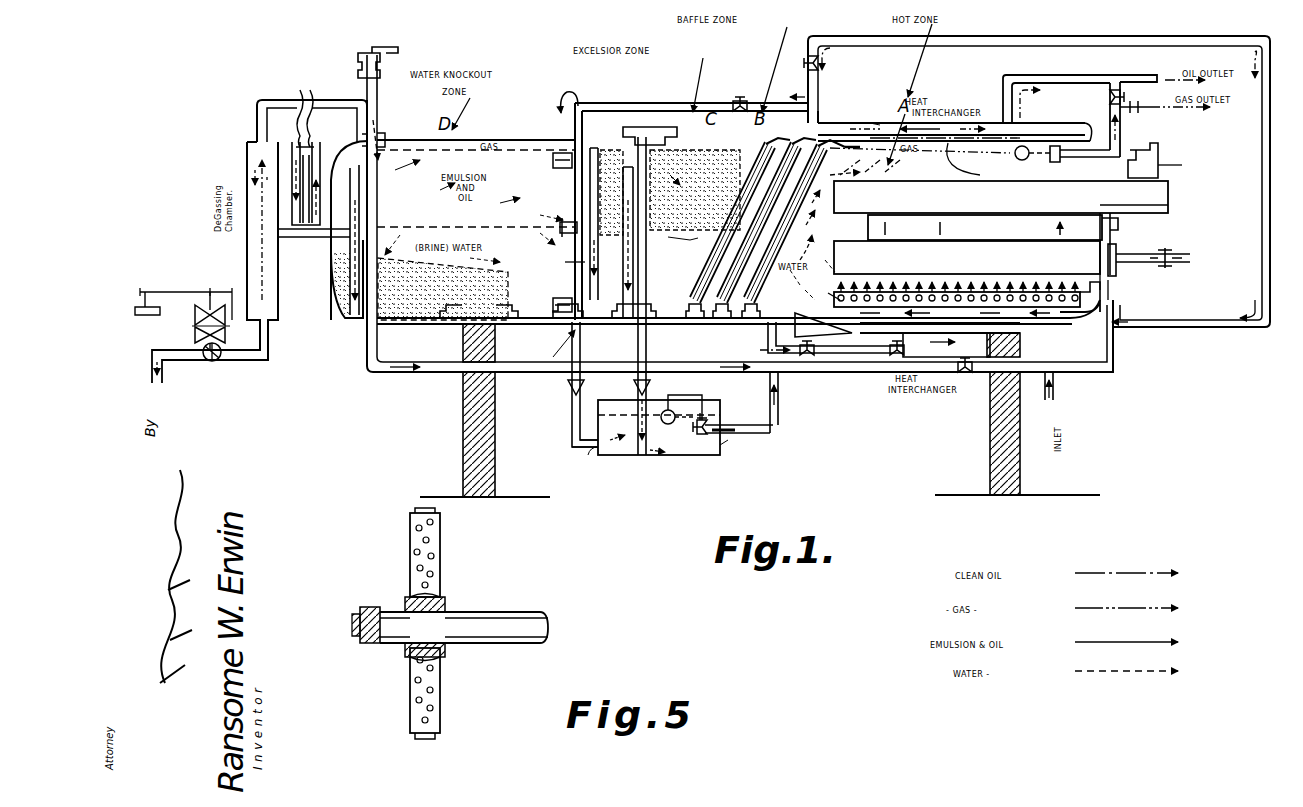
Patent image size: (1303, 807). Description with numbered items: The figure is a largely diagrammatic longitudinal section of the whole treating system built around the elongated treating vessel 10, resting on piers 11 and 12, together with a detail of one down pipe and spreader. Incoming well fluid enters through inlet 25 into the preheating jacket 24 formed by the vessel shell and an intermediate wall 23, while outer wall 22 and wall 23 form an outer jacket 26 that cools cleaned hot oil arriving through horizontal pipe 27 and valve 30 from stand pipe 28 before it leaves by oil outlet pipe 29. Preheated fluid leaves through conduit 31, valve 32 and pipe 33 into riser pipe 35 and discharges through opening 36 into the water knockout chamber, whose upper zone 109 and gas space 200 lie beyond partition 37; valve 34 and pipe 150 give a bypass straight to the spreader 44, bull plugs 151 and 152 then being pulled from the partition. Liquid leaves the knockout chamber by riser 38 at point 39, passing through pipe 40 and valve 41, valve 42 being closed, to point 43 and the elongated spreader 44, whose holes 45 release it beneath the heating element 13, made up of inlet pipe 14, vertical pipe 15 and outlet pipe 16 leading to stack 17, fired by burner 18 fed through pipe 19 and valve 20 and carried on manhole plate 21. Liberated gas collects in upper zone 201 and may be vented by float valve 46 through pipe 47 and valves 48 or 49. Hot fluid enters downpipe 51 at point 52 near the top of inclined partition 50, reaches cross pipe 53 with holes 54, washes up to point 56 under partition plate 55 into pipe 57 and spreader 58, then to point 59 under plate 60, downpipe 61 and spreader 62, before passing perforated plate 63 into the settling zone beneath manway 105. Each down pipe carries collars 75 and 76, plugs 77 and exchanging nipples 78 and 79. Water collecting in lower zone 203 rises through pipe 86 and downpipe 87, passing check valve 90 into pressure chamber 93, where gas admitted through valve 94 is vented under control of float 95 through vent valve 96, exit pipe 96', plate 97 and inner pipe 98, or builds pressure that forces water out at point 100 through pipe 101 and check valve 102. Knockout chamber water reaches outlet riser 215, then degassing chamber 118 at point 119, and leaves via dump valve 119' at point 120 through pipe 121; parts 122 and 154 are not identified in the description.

In FIG. 1, the treating vessel 10 is at (552, 140).
In FIG. 1, the pier 11 is at (463, 438).
In FIG. 1, the pier 12 is at (1022, 478).
In FIG. 1, the heating element 13 is at (1172, 210).
In FIG. 1, the horizontal inlet pipe 14 is at (967, 257).
In FIG. 1, the vertical pipe 15 is at (970, 227).
In FIG. 1, the horizontal outlet pipe 16 is at (1001, 197).
In FIG. 1, the stack or discharge pipe 17 is at (1166, 160).
In FIG. 1, the burner 18 is at (1116, 272).
In FIG. 1, the fuel pipe 19 is at (1152, 264).
In FIG. 1, the valve 20 is at (1168, 250).
In FIG. 1, the removable manhole cover or plate 21 is at (1112, 226).
In FIG. 1, the outer wall 22 is at (862, 123).
In FIG. 1, the intermediate wall 23 is at (1026, 146).
In FIG. 1, the preheating jacket 24 is at (988, 130).
In FIG. 1, the inlet 25 is at (1060, 398).
In FIG. 1, the outer jacket 26 is at (877, 126).
In FIG. 1, the horizontal pipe 27 is at (775, 337).
In FIG. 1, the stand pipe 28 is at (607, 223).
In FIG. 1, the oil outlet pipe 29 is at (1042, 82).
In FIG. 1, the valve 30 is at (807, 360).
In FIG. 1, the conduit 31 is at (813, 120).
In FIG. 1, the valve 32 is at (742, 95).
In FIG. 1, the pipe 33 is at (660, 103).
In FIG. 1, the valve 34 is at (824, 64).
In FIG. 1, the inside riser pipe 35 is at (565, 82).
In FIG. 1, the opening 36 is at (563, 222).
In FIG. 1, the partition plate 37 is at (560, 265).
In FIG. 1, the second riser pipe 38 is at (378, 200).
In FIG. 1, the point 39 is at (352, 147).
In FIG. 1, the pipe 40 is at (570, 374).
In FIG. 1, the valve 41 is at (972, 375).
In FIG. 1, the valve 42 is at (890, 358).
In FIG. 1, the point 43 is at (984, 302).
In FIG. 1, the elongated spreader 44 is at (853, 295).
In FIG. 1, the holes 45 is at (833, 296).
In FIG. 1, the float controlled valve 46 is at (1058, 148).
In FIG. 1, the pipe 47 is at (1120, 130).
In FIG. 1, the valve 48 is at (1106, 98).
In FIG. 1, the valve 49 is at (1138, 107).
In FIG. 1, the inclined partition plate 50 is at (805, 232).
In FIG. 1, the downpipe 51 is at (809, 197).
In FIG. 5, the downpipe 51 is at (523, 612).
In FIG. 1, the point 52 is at (826, 148).
In FIG. 1, the cross pipe or spreader 53 is at (752, 300).
In FIG. 5, the cross pipe or spreader 53 is at (445, 567).
In FIG. 5, the small holes 54 is at (433, 557).
In FIG. 1, the second partition plate 55 is at (805, 220).
In FIG. 1, the point 56 is at (802, 140).
In FIG. 1, the pipe 57 is at (778, 143).
In FIG. 1, the spreader pipe 58 is at (729, 327).
In FIG. 1, the point 59 is at (835, 162).
In FIG. 1, the plate 60 is at (697, 240).
In FIG. 1, the downpipe 61 is at (670, 191).
In FIG. 1, the spreader 62 is at (688, 282).
In FIG. 1, the perforated partition plate 63 is at (712, 192).
In FIG. 5, the collar 75 is at (447, 654).
In FIG. 5, the collar 76 is at (405, 602).
In FIG. 5, the plug 77 is at (356, 614).
In FIG. 5, the exchanging nipple 78 is at (442, 600).
In FIG. 5, the exchanging nipple 79 is at (410, 662).
In FIG. 1, the riser pipe 86 is at (616, 258).
In FIG. 1, the downpipe 87 is at (650, 338).
In FIG. 1, the check valve 90 is at (634, 390).
In FIG. 1, the closed pressure chamber 93 is at (659, 444).
In FIG. 1, the valve 94 is at (712, 411).
In FIG. 1, the float 95 is at (670, 409).
In FIG. 1, the vent valve 96 is at (731, 461).
In FIG. 1, the exit pipe 96' is at (790, 402).
In FIG. 1, the plate 97 is at (740, 435).
In FIG. 1, the pipe 98 is at (690, 215).
In FIG. 1, the point 100 is at (596, 457).
In FIG. 1, the pipe 101 is at (572, 432).
In FIG. 1, the check valve 102 is at (572, 400).
In FIG. 1, the manhole 105 is at (658, 130).
In FIG. 1, the upper zone 109 is at (443, 261).
In FIG. 1, the degassing chamber 118 is at (247, 259).
In FIG. 1, the point 119 is at (314, 245).
In FIG. 1, the diaphragm dump valve 119' is at (186, 336).
In FIG. 1, the point 120 is at (222, 358).
In FIG. 1, the pipe 121 is at (160, 373).
In FIG. 1, the wavy pipe 122 is at (298, 100).
In FIG. 1, the pipe 150 is at (1012, 30).
In FIG. 1, the bull plug 151 is at (556, 168).
In FIG. 1, the bull plug 152 is at (557, 298).
In FIG. 1, the flange 154 is at (384, 134).
In FIG. 1, the upper portion 200 is at (495, 132).
In FIG. 1, the upper zone 201 is at (983, 163).
In FIG. 1, the lower zone 203 is at (575, 320).
In FIG. 1, the outlet riser 215 is at (340, 310).